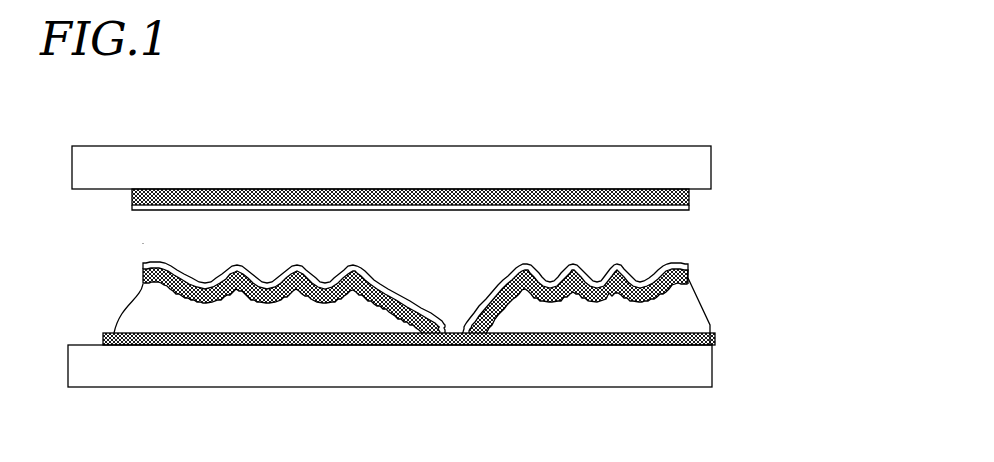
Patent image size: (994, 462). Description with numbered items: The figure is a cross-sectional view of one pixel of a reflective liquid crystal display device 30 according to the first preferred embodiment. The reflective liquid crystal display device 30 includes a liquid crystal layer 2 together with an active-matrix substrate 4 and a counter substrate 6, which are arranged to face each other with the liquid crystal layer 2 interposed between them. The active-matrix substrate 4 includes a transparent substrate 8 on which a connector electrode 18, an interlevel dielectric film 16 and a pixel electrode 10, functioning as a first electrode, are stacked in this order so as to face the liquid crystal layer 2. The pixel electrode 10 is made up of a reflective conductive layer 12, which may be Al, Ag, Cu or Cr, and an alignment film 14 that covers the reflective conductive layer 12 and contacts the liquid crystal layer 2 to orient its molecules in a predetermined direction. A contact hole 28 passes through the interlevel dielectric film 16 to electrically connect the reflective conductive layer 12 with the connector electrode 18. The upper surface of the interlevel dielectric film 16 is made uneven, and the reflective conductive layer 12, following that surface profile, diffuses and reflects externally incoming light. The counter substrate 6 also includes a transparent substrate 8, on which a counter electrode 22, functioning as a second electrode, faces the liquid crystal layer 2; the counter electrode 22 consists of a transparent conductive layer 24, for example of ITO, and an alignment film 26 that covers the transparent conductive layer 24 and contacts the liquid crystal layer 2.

The reflective liquid crystal display device 30 is at (776, 121).
The counter substrate 6 is at (58, 145).
The transparent substrate 8 is at (703, 164).
The counter electrode 22 is at (773, 190).
The transparent conductive layer 24 is at (689, 193).
The alignment film 26 is at (689, 209).
The liquid crystal layer 2 is at (143, 243).
The active-matrix substrate 4 is at (58, 387).
The connector electrode 18 is at (715, 340).
The interlevel dielectric film 16 is at (690, 322).
The pixel electrode 10 is at (753, 260).
The reflective conductive layer 12 is at (689, 277).
The alignment film 14 is at (689, 262).
The contact hole 28 is at (452, 320).